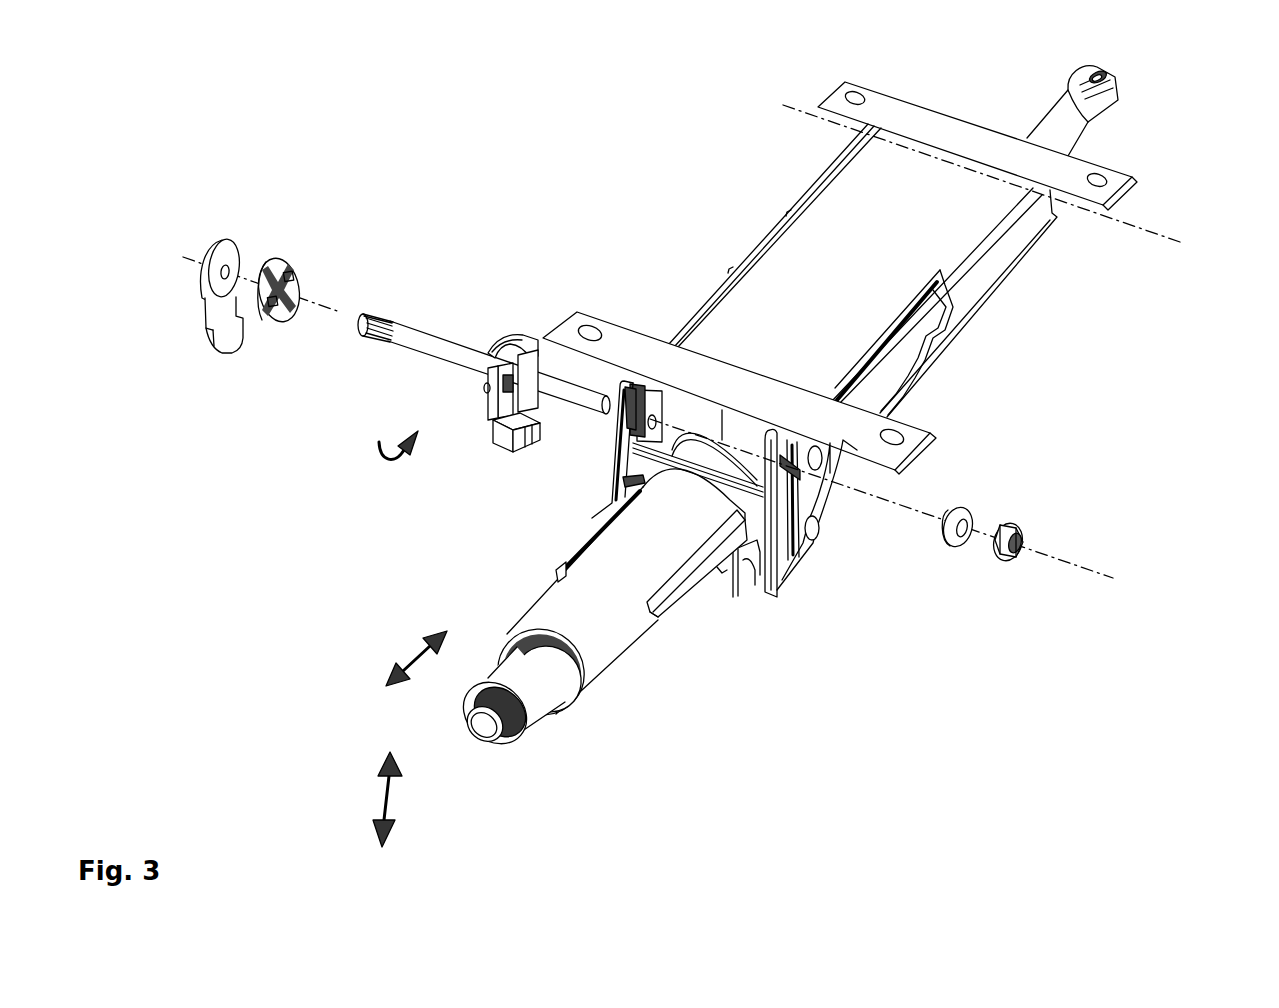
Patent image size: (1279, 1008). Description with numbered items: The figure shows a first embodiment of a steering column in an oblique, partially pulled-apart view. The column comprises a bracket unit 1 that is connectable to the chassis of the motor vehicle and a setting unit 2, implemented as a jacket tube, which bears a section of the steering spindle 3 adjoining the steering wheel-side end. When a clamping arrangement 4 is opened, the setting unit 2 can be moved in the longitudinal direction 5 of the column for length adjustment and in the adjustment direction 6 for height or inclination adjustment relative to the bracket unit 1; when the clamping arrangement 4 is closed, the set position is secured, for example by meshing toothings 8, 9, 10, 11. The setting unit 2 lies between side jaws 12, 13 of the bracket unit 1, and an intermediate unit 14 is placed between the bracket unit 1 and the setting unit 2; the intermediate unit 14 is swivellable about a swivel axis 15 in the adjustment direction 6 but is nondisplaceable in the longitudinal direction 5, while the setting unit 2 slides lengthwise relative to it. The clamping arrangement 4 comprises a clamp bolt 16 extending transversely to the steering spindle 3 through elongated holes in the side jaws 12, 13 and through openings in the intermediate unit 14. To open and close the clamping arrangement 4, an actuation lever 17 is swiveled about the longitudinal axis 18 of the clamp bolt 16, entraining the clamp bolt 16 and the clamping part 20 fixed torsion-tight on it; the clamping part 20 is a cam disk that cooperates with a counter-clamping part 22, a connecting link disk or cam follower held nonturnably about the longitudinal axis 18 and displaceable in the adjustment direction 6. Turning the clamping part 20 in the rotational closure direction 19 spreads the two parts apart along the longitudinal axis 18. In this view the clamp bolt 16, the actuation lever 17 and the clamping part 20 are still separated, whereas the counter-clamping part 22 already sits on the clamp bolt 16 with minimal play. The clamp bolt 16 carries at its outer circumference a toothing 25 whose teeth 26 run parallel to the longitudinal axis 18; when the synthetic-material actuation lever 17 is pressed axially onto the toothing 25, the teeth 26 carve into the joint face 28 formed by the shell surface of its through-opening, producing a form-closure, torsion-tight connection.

The bracket unit 1 is at (908, 360).
The setting unit 2 is at (605, 643).
The steering spindle 3 is at (540, 697).
The clamping arrangement 4 is at (452, 440).
The longitudinal direction 5 is at (410, 657).
The adjustment direction 6 is at (382, 800).
The toothing 8 is at (503, 397).
The toothing 9 is at (635, 403).
The toothing 10 is at (523, 450).
The toothing 11 is at (620, 510).
The side jaw 12 is at (623, 460).
The side jaw 13 is at (781, 598).
The intermediate unit 14 is at (752, 543).
The swivel axis 15 is at (1140, 233).
The clamp bolt 16 is at (450, 342).
The actuation lever 17 is at (183, 300).
The longitudinal axis 18 is at (336, 308).
The rotational closure direction 19 is at (386, 462).
The clamping part 20 is at (268, 250).
The counter-clamping part 22 is at (527, 330).
The toothing 25 is at (373, 335).
The teeth 26 is at (380, 317).
The joint face 28 is at (224, 278).